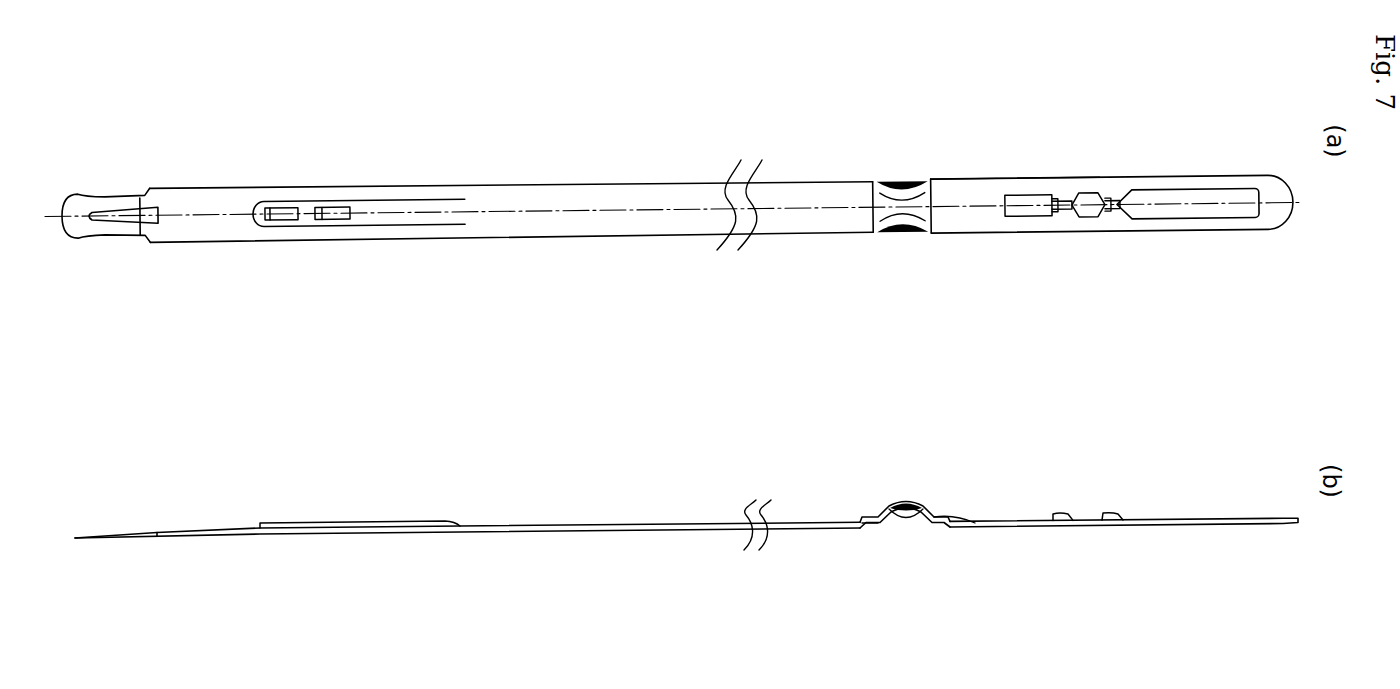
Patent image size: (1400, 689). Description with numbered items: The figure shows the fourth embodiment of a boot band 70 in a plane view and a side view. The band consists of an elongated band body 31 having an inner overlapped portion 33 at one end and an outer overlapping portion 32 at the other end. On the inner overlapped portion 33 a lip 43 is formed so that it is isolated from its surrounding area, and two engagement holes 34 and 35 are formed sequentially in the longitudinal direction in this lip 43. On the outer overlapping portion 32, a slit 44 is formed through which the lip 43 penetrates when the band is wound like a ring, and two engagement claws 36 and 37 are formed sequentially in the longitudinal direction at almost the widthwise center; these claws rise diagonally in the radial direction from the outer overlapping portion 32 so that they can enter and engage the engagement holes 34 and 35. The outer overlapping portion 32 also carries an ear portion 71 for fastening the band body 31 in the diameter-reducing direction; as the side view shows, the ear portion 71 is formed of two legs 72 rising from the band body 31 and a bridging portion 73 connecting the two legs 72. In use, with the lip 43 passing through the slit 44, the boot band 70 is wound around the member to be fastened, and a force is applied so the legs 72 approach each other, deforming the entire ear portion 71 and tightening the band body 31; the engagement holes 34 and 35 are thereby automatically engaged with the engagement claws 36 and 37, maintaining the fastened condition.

The band body 31 is at (601, 185).
The outer overlapping portion 32 is at (996, 180).
The inner overlapped portion 33 is at (222, 185).
The engagement hole 34 is at (332, 208).
The engagement hole 35 is at (283, 208).
The engagement claw 36 is at (1109, 214).
The engagement claw 37 is at (1061, 214).
The lip 43 is at (405, 204).
The slit 44 is at (1183, 198).
The boot band 70 is at (1062, 157).
The ear portion 71 is at (901, 183).
The leg 72 is at (867, 525).
The bridging portion 73 is at (905, 502).